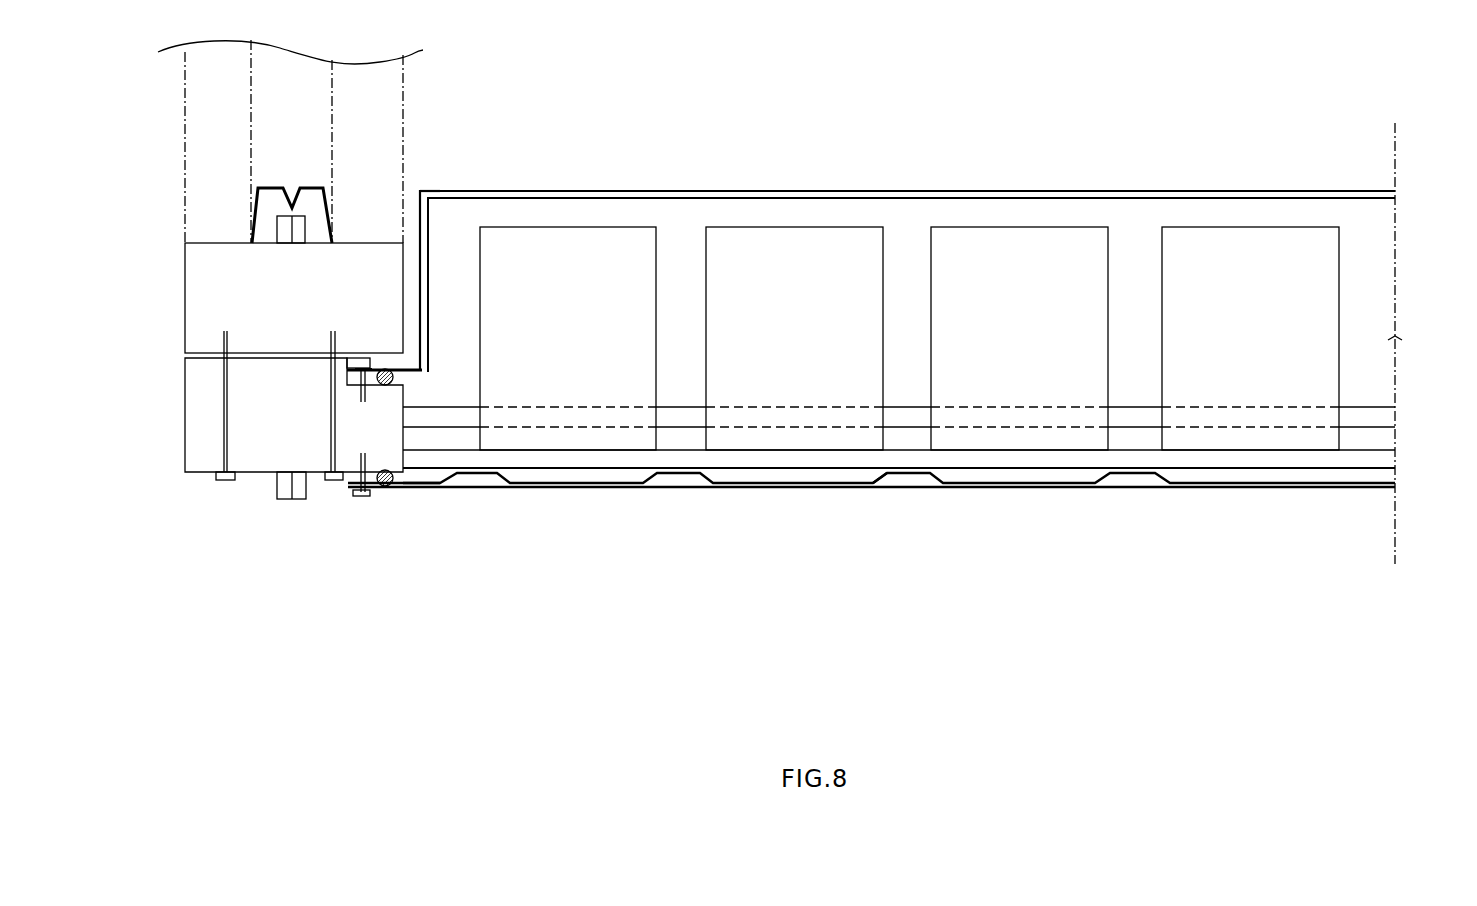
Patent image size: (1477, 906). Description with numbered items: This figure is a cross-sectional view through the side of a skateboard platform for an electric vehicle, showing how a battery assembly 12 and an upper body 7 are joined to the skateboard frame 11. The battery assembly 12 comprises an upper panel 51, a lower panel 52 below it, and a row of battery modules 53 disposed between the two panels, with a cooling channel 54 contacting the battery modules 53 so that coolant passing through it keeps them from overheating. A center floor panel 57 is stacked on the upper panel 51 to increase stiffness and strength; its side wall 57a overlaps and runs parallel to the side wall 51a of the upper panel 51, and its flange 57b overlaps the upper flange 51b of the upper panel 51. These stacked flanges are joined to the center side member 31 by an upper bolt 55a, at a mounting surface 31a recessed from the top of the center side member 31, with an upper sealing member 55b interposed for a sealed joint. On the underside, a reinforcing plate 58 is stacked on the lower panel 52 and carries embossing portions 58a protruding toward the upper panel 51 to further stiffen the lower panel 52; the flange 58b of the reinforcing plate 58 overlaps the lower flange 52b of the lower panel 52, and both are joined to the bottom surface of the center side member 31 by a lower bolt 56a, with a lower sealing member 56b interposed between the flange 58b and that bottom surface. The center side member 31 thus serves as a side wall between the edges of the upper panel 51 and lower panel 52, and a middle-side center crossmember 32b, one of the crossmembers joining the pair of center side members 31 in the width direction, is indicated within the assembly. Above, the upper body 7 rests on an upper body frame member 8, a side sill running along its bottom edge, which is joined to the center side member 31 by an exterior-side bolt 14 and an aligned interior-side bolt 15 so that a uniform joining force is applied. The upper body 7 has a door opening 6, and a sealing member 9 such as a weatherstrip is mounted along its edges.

The door opening 6 is at (251, 133).
The upper body 7 is at (403, 97).
The upper body frame member 8 is at (185, 297).
The sealing member 9 is at (252, 210).
The skateboard frame 11 is at (140, 390).
The battery assembly 12 is at (1404, 294).
The exterior-side bolt 14 is at (225, 440).
The interior-side bolt 15 is at (333, 425).
The center side member 31 is at (185, 433).
The mounting surface 31a is at (375, 368).
The middle-side center crossmember 32b is at (1056, 430).
The upper panel 51 is at (980, 198).
The side wall 51a is at (430, 212).
The upper flange 51b is at (426, 372).
The lower panel 52 is at (998, 488).
The lower flange 52b is at (390, 488).
The battery module 53 is at (563, 245).
The cooling channel 54 is at (596, 458).
The upper bolt 55a is at (358, 358).
The upper sealing member 55b is at (396, 376).
The lower bolt 56a is at (358, 497).
The lower sealing member 56b is at (395, 477).
The center floor panel 57 is at (852, 190).
The side wall 57a is at (420, 212).
The flange 57b is at (412, 368).
The reinforcing plate 58 is at (795, 486).
The embossing portion 58a is at (877, 477).
The flange 58b is at (363, 452).